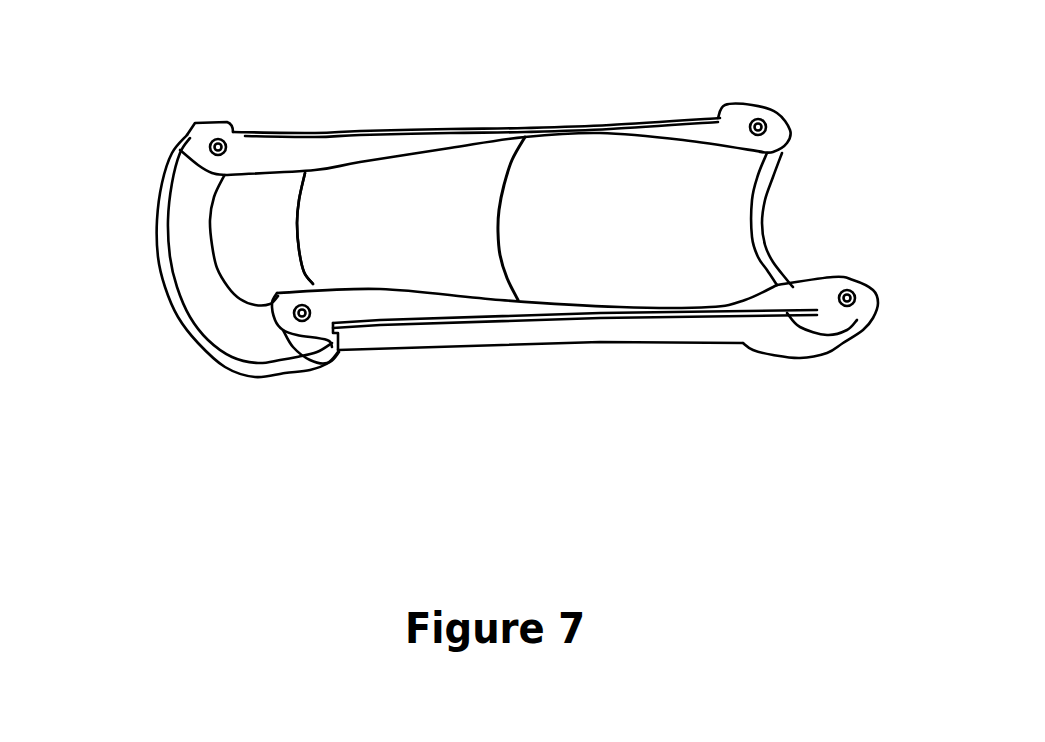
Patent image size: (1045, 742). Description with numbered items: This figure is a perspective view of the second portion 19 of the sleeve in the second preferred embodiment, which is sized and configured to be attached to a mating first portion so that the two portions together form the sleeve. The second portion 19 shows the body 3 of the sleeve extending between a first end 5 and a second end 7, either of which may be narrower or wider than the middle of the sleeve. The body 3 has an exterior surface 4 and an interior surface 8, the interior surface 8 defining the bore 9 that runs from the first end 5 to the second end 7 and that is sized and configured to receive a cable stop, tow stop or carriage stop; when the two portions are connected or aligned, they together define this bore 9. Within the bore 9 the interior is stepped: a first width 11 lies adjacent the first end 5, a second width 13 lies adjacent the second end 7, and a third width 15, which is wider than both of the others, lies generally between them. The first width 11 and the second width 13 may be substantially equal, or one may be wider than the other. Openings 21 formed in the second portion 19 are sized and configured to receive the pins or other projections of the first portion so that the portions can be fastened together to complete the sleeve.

The body 3 is at (353, 353).
The exterior surface 4 is at (482, 353).
The first end 5 is at (768, 188).
The second end 7 is at (150, 250).
The interior surface 8 is at (390, 190).
The bore 9 is at (490, 222).
The first width 11 is at (747, 268).
The second width 13 is at (237, 232).
The third width 15 is at (618, 165).
The second portion 19 is at (632, 405).
The openings 21 is at (855, 315).